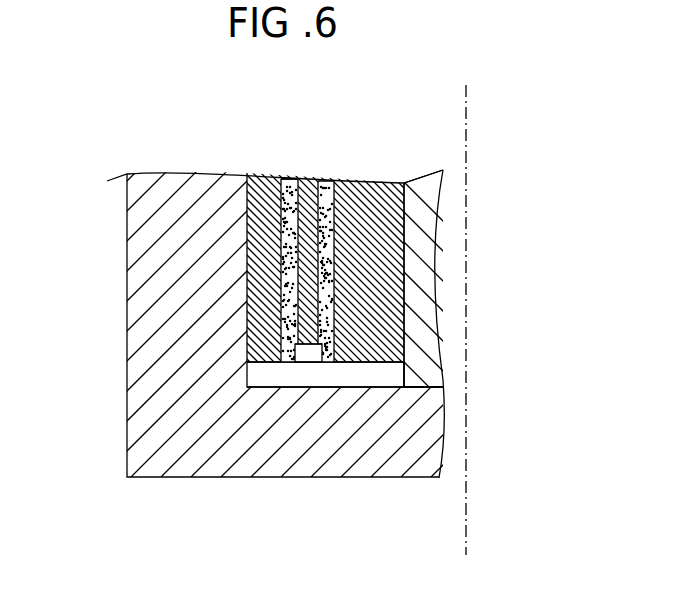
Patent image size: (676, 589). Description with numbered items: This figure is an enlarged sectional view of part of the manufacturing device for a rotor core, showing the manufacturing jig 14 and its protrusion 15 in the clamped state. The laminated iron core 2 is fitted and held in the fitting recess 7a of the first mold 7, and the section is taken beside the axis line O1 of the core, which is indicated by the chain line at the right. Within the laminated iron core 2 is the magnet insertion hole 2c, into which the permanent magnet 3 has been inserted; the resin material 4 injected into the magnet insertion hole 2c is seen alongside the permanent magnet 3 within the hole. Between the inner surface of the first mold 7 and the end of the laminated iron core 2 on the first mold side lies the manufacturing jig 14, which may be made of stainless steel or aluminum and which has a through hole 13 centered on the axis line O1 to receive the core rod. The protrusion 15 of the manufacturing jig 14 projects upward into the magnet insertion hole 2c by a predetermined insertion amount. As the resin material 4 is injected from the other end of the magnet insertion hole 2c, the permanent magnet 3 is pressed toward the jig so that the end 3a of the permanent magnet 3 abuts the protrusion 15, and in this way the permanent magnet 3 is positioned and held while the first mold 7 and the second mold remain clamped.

The laminated iron core 2 is at (248, 207).
The magnet insertion hole 2c is at (290, 178).
The permanent magnet 3 is at (306, 247).
The end of the permanent magnet 3a is at (302, 345).
The resin material 4 is at (323, 190).
The first mold 7 is at (118, 325).
The fitting recess 7a is at (434, 248).
The through hole 13 is at (415, 390).
The manufacturing jig 14 is at (303, 377).
The protrusion 15 is at (315, 357).
The axis line O1 is at (465, 305).